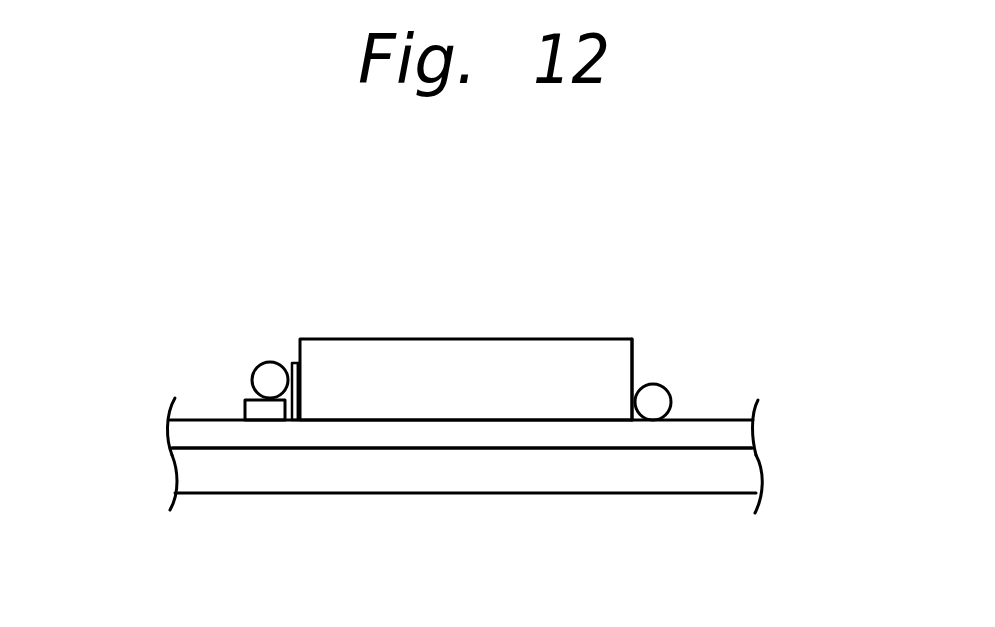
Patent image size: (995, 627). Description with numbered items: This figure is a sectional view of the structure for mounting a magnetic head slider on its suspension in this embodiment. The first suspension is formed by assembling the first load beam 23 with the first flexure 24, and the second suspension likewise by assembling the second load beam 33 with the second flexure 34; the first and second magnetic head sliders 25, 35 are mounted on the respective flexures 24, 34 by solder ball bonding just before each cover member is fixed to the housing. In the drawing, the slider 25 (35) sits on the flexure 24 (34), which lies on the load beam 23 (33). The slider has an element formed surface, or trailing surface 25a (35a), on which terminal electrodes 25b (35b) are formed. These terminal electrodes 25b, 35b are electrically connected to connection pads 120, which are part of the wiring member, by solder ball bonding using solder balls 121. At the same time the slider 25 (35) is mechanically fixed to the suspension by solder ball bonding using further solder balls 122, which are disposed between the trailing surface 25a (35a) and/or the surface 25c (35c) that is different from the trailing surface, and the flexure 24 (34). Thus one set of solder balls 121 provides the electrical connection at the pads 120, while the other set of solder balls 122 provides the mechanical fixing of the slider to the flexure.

The first load beam 23 is at (466, 517).
The second load beam 33 is at (658, 467).
The first flexure 24 is at (545, 401).
The second flexure 34 is at (718, 433).
The first magnetic head slider 25 is at (470, 327).
The second magnetic head slider 35 is at (543, 353).
The trailing surface 25a is at (388, 320).
The trailing surface 35a is at (296, 363).
The terminal electrodes 25b is at (216, 299).
The terminal electrodes 35b is at (290, 368).
The surface different from the trailing surface 25c is at (756, 305).
The surface different from the trailing surface 35c is at (636, 362).
The connection pads 120 is at (263, 410).
The solder balls 121 is at (273, 377).
The solder balls 122 is at (654, 394).